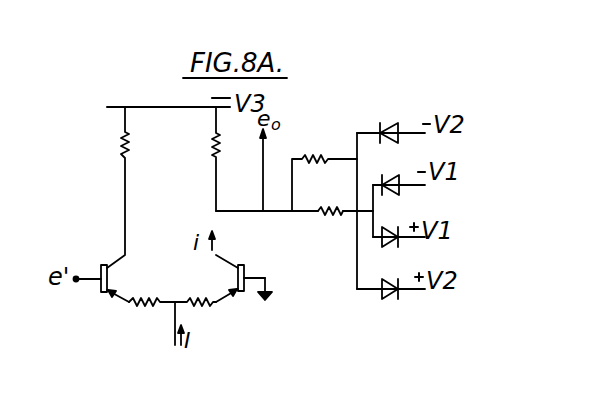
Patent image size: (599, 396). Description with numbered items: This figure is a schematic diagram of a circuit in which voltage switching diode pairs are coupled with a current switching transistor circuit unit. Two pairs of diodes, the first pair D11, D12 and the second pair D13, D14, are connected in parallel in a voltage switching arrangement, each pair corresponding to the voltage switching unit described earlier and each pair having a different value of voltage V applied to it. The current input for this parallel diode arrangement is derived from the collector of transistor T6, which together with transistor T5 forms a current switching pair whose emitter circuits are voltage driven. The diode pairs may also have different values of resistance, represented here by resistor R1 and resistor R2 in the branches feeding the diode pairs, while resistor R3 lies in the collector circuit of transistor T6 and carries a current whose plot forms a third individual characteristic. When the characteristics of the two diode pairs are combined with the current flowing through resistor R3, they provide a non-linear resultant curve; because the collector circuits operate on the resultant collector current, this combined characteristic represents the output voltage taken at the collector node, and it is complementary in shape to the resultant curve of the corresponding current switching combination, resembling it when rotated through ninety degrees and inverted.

The transistor T5 is at (107, 283).
The transistor T6 is at (234, 278).
The resistor R1 is at (331, 198).
The resistor R2 is at (324, 169).
The resistor R3 is at (198, 159).
The diode D11 is at (391, 117).
The diode D12 is at (391, 303).
The diode D13 is at (395, 174).
The diode D14 is at (394, 248).